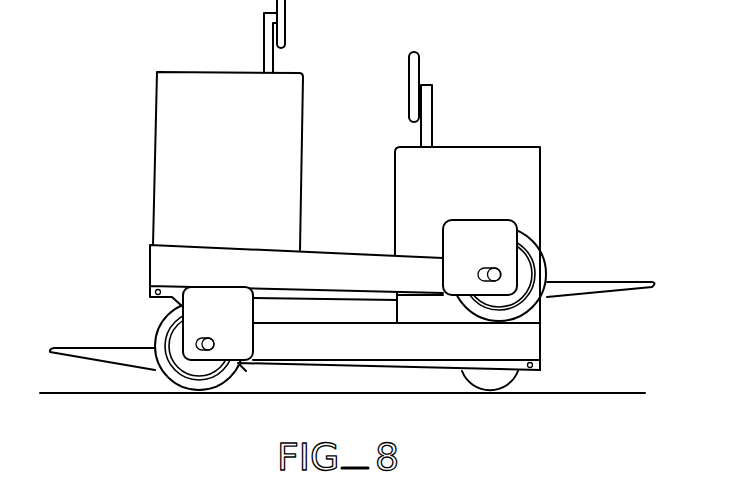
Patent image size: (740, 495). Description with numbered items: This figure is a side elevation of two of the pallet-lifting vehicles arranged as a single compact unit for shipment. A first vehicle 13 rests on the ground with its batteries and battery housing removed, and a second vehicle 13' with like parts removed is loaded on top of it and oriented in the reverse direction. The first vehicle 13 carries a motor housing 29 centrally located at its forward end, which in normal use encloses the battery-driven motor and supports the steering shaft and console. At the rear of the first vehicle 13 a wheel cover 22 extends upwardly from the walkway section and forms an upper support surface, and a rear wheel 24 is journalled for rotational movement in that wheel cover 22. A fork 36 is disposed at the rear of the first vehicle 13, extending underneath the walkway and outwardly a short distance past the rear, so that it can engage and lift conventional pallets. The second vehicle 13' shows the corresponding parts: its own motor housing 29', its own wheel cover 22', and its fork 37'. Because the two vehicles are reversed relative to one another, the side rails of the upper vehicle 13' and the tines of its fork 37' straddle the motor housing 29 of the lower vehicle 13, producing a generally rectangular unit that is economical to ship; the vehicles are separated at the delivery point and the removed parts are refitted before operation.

The second vehicle 13' is at (236, 36).
The motor housing 29' is at (228, 161).
The first vehicle 13 is at (476, 99).
The motor housing 29 is at (467, 258).
The wheel cover 22 is at (218, 323).
The wheel cover 22' is at (494, 258).
The rear wheel 24 is at (157, 331).
The fork 36 is at (86, 346).
The fork 37' is at (603, 274).